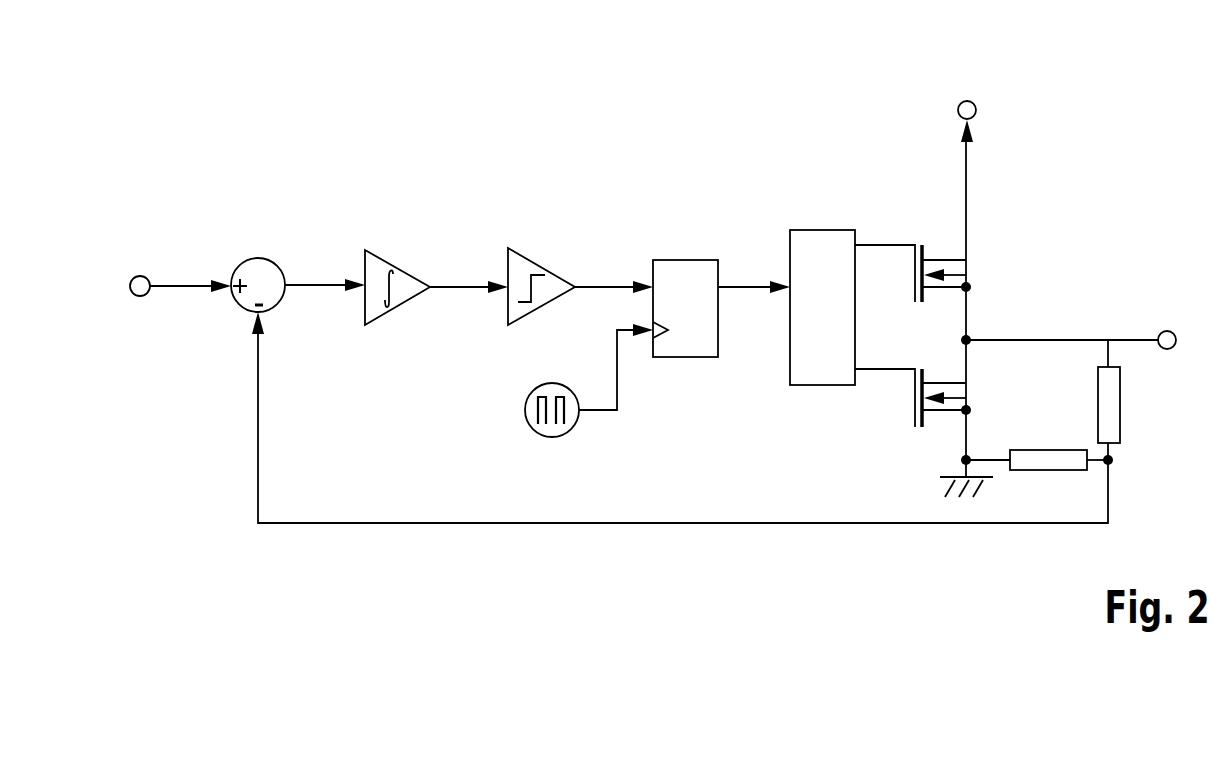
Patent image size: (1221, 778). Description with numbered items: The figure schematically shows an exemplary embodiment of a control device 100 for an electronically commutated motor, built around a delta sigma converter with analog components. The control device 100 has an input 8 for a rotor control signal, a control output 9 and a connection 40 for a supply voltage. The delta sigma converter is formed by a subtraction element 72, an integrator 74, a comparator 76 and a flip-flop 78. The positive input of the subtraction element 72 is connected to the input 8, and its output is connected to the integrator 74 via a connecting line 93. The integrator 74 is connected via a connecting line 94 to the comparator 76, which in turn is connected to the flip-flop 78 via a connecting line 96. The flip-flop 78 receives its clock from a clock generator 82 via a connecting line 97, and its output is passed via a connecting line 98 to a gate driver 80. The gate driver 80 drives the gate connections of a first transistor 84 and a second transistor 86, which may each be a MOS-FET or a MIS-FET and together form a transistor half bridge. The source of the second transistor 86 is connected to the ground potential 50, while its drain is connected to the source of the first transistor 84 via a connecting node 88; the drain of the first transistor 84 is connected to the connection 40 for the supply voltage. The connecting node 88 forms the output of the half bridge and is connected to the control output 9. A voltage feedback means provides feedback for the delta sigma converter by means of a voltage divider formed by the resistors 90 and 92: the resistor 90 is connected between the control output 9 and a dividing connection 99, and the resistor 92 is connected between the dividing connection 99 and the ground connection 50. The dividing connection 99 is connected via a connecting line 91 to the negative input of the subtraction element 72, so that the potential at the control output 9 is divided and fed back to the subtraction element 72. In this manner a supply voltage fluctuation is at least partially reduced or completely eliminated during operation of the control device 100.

The input 8 is at (141, 276).
The control output 9 is at (1166, 330).
The connection for a supply voltage 40 is at (977, 108).
The ground potential 50 is at (990, 473).
The subtraction element 72 is at (259, 258).
The integrator 74 is at (390, 250).
The comparator 76 is at (541, 263).
The flip-flop 78 is at (687, 359).
The gate driver 80 is at (822, 388).
The clock generator 82 is at (525, 412).
The first transistor 84 is at (913, 278).
The second transistor 86 is at (912, 405).
The connecting node 88 is at (970, 345).
The resistor 90 is at (1122, 407).
The connecting line 91 is at (685, 525).
The resistor 92 is at (1053, 450).
The connecting line 93 is at (310, 282).
The connecting line 94 is at (460, 283).
The connecting line 96 is at (607, 283).
The connecting line 97 is at (600, 412).
The connecting line 98 is at (753, 283).
The dividing connection 99 is at (1112, 465).
The control device 100 is at (763, 114).